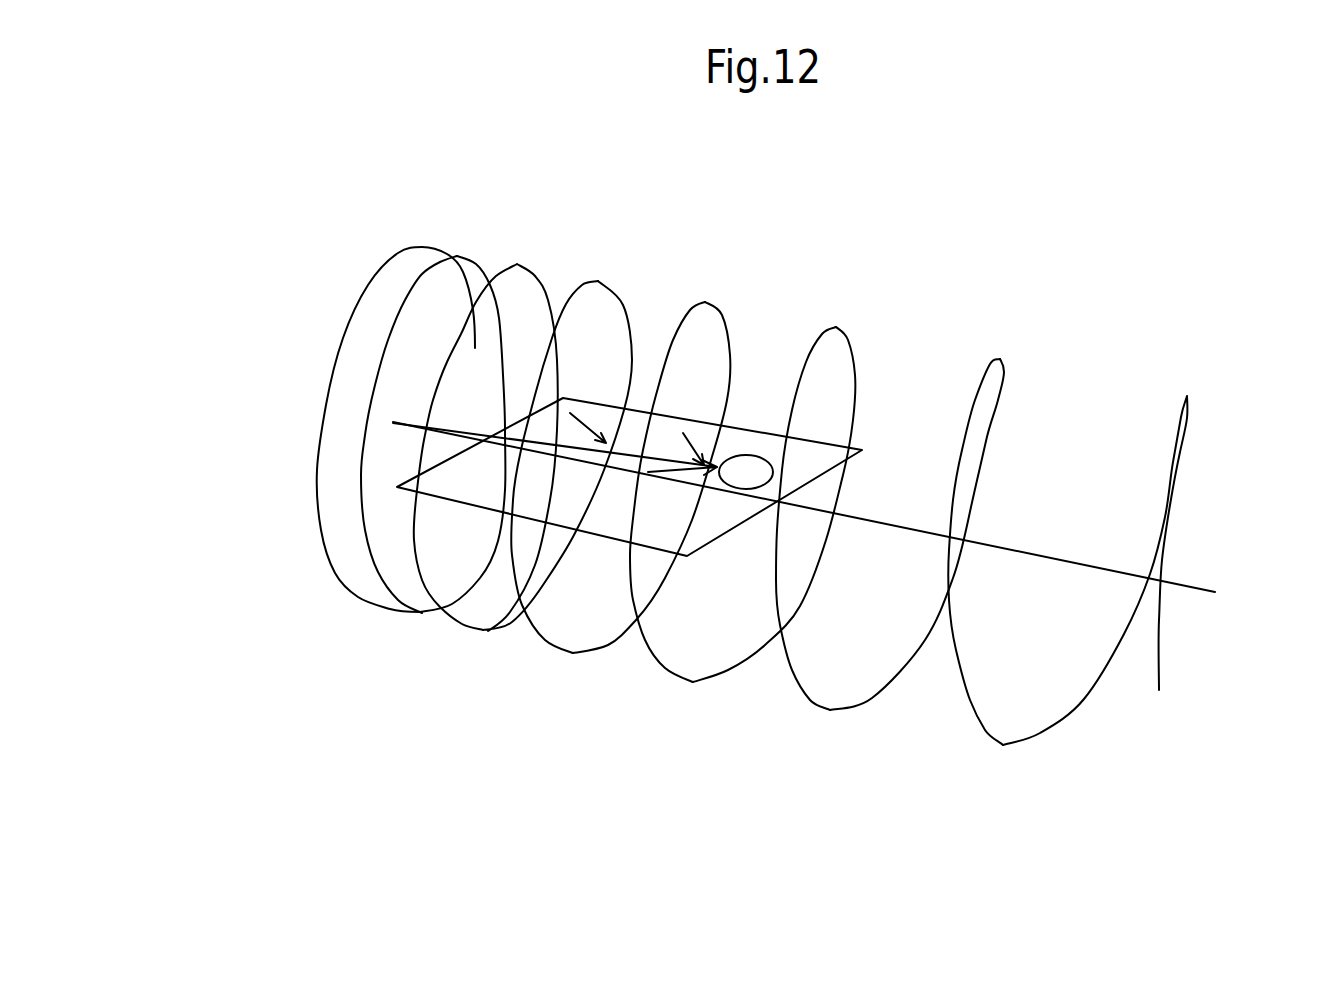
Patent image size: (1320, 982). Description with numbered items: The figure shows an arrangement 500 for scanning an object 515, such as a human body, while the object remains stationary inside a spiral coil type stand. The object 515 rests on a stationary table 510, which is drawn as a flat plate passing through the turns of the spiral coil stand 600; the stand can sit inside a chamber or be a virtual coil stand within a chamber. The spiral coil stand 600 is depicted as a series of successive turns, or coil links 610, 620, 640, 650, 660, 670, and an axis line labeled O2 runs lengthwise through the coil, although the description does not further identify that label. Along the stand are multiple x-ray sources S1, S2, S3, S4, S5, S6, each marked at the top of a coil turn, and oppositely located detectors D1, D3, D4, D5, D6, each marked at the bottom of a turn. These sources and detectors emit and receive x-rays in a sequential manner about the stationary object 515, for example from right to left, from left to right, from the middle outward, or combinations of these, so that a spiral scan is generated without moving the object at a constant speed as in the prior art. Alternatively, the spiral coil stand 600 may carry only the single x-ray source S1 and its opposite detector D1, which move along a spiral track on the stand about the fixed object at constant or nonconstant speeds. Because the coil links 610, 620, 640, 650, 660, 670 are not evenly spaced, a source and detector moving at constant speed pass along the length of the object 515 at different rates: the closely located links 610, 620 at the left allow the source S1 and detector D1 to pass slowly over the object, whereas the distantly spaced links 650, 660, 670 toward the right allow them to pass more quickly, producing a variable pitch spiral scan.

The arrangement 500 is at (1062, 204).
The stationary table 510 is at (770, 437).
The object 515 is at (740, 480).
The spiral coil stand 600 is at (595, 205).
The coil link 610 is at (357, 396).
The coil link 620 is at (463, 257).
The coil link 640 is at (737, 306).
The coil link 650 is at (851, 333).
The coil link 660 is at (1007, 362).
The coil link 670 is at (1187, 396).
The x-ray source S1 is at (377, 283).
The x-ray source S2 is at (317, 468).
The x-ray source S3 is at (592, 280).
The x-ray source S4 is at (710, 300).
The x-ray source S5 is at (858, 302).
The x-ray source S6 is at (1006, 335).
The optical axis O2 is at (498, 403).
The detector D1 is at (413, 617).
The detector D3 is at (573, 655).
The detector D4 is at (693, 684).
The detector D5 is at (830, 712).
The detector D6 is at (1005, 748).